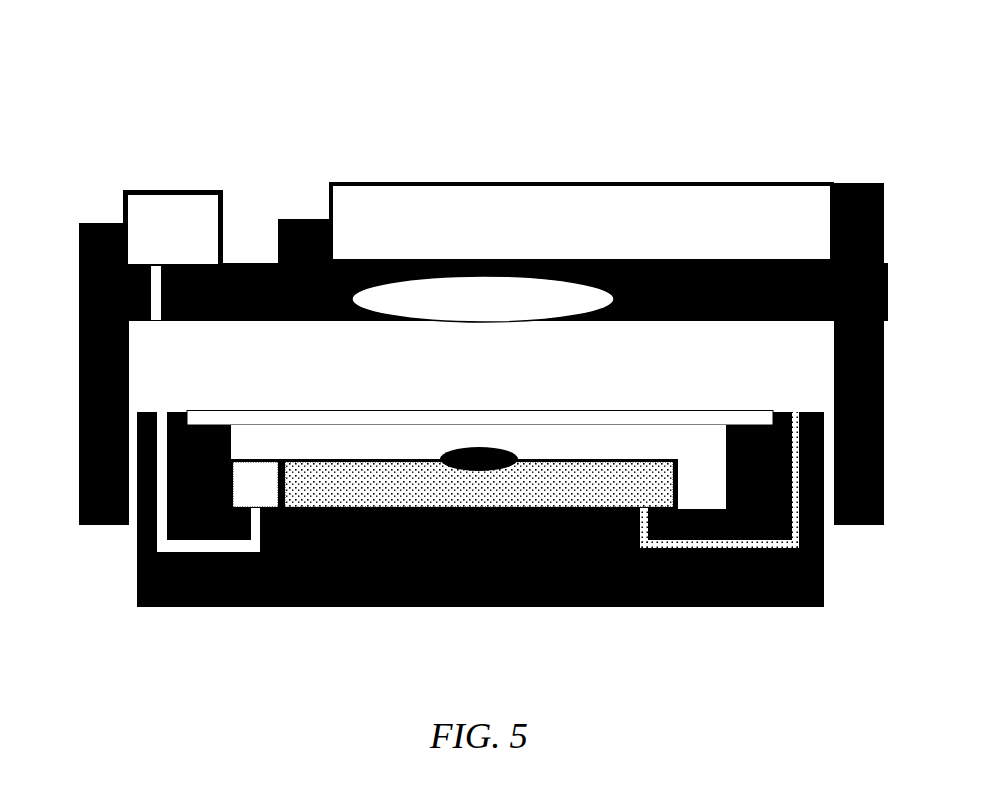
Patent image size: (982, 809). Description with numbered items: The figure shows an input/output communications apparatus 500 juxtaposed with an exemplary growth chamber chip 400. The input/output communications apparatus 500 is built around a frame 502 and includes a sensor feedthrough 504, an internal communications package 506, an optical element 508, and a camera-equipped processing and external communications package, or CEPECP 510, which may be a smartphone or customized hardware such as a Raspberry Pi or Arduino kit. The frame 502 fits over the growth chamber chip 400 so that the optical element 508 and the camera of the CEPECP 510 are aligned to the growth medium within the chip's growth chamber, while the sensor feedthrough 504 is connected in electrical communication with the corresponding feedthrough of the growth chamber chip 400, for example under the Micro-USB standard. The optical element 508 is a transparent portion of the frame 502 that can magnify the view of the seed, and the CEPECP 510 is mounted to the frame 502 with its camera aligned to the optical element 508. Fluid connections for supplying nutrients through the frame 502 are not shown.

The growth chamber chip 400 is at (615, 627).
The input/output communications apparatus 500 is at (568, 113).
The frame 502 is at (107, 223).
The sensor feedthrough 504 is at (161, 308).
The internal communications package 506 is at (190, 244).
The optical element 508 is at (448, 288).
The camera-equipped processing and external communications package (CEPECP) 510 is at (643, 222).